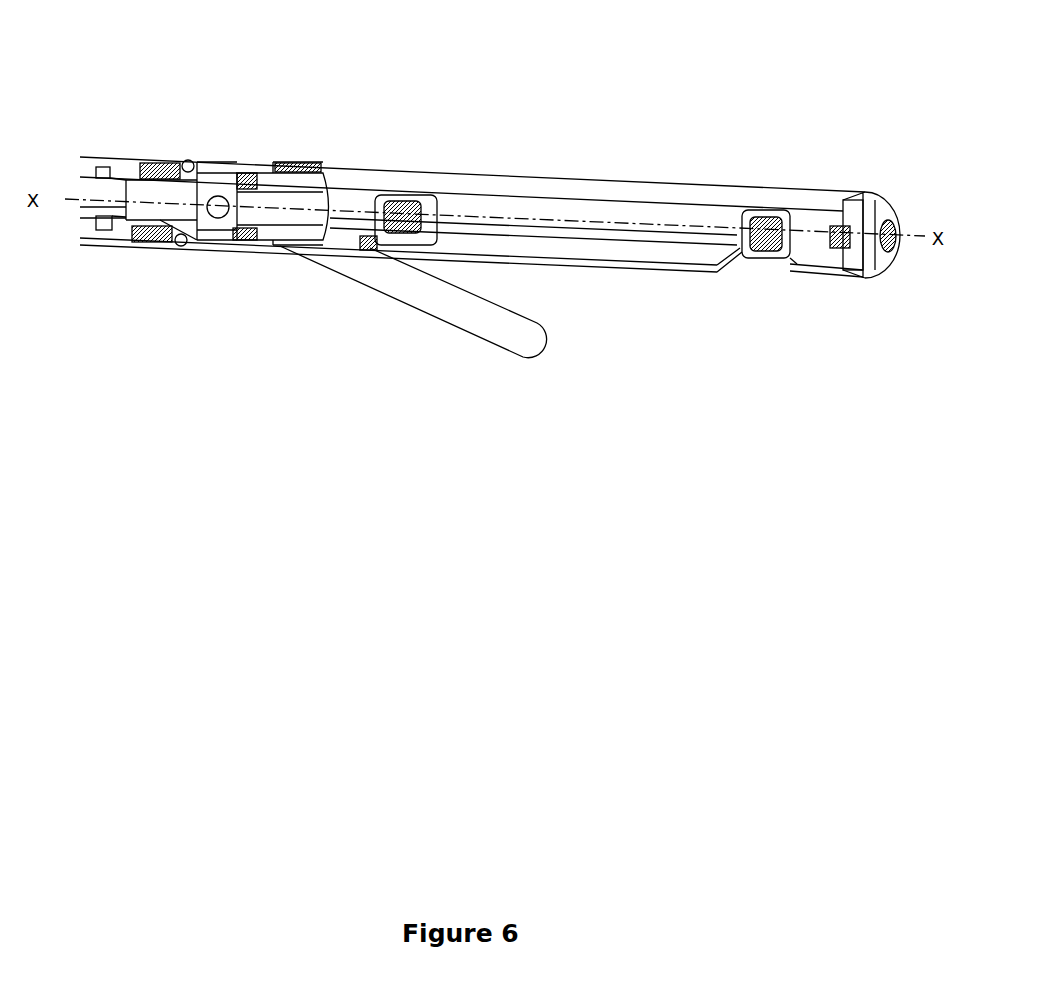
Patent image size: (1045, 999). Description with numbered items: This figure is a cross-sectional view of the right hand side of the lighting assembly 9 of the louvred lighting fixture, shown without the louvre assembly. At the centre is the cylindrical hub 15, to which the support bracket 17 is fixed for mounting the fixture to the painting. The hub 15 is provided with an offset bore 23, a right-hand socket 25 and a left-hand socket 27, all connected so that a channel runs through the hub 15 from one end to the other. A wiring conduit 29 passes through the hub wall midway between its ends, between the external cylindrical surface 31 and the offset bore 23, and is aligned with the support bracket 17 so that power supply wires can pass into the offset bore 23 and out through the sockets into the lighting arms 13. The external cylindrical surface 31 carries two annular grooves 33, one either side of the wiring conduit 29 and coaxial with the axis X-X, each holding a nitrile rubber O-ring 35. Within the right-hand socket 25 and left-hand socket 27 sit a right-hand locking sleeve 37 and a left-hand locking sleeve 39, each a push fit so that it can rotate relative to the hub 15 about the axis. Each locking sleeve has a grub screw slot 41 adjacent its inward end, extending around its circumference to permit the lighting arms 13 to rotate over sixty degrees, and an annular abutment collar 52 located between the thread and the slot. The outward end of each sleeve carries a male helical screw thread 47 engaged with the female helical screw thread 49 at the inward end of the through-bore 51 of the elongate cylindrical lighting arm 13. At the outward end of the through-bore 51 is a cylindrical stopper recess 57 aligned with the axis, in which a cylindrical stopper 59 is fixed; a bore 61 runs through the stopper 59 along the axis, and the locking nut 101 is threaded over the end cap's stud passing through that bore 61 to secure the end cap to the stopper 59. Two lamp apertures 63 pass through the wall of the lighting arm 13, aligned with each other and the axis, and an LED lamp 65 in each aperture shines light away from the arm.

The lighting assembly 9 is at (752, 96).
The lighting arm 13 is at (95, 167).
The hub 15 is at (268, 162).
The support bracket 17 is at (497, 348).
The offset bore 23 is at (202, 183).
The right-hand socket 25 is at (255, 163).
The left-hand socket 27 is at (180, 172).
The wiring conduit 29 is at (213, 218).
The external cylindrical surface 31 is at (232, 165).
The annular groove 33 is at (178, 250).
The O-ring 35 is at (180, 243).
The right-hand locking sleeve 37 is at (315, 167).
The left-hand locking sleeve 39 is at (127, 173).
The grub screw slot 41 is at (170, 173).
The male helical screw thread 47 is at (120, 240).
The female helical screw thread 49 is at (305, 238).
The through-bore 51 is at (620, 193).
The annular abutment collar 52 is at (287, 165).
The stopper recess 57 is at (863, 263).
The stopper 59 is at (875, 217).
The bore 61 is at (870, 292).
The lamp aperture 63 is at (882, 228).
The LED lamp 65 is at (430, 203).
The locking nut 101 is at (847, 222).